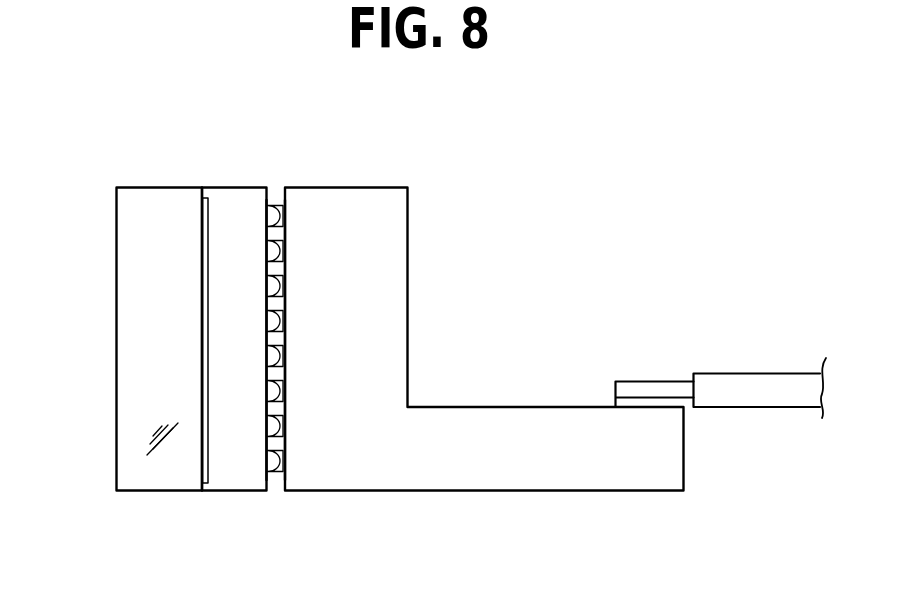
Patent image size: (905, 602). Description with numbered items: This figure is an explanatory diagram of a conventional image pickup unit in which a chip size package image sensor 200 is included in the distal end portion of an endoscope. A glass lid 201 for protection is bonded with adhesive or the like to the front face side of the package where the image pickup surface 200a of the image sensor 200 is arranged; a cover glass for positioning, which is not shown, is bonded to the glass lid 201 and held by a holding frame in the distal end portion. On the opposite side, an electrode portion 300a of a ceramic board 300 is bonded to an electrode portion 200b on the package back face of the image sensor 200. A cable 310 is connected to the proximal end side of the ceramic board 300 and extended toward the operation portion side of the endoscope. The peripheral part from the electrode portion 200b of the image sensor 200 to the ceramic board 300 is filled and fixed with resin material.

The glass lid 201 is at (158, 187).
The image sensor 200 is at (237, 187).
The image pickup surface 200a is at (203, 307).
The electrode portion 200b is at (271, 495).
The ceramic board 300 is at (353, 187).
The electrode portion 300a is at (282, 495).
The cable 310 is at (759, 372).